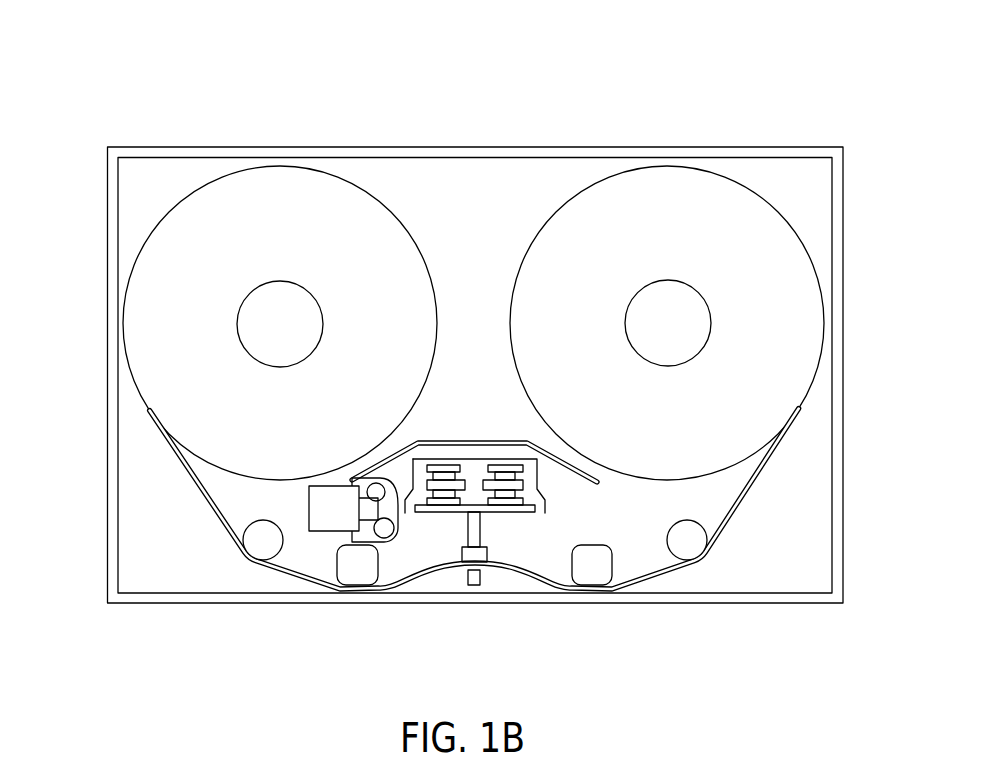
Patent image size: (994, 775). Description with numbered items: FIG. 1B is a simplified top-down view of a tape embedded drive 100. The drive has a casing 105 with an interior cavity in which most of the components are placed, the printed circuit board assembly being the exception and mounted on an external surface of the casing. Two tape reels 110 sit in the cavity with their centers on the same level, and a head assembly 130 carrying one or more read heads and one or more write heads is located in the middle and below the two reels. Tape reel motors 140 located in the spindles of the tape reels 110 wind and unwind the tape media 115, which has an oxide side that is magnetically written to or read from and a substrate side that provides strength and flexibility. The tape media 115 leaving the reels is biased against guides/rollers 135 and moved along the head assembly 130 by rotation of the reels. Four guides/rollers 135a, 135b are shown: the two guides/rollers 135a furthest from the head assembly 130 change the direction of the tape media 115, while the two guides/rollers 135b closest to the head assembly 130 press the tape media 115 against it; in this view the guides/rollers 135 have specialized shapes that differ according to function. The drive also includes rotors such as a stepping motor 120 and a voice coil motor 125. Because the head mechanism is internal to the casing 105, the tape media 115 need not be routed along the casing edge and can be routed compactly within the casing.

The tape embedded drive 100 is at (101, 72).
The casing 105 is at (504, 147).
The tape reel 110 is at (265, 167).
The tape media 115 is at (211, 505).
The stepping motor 120 is at (318, 532).
The voice coil motor 125 is at (452, 510).
The head assembly 130 is at (482, 573).
The guides/rollers 135 is at (262, 543).
The guide/roller 135a is at (692, 550).
The guide/roller 135b is at (358, 572).
The tape reel motor 140 is at (310, 293).